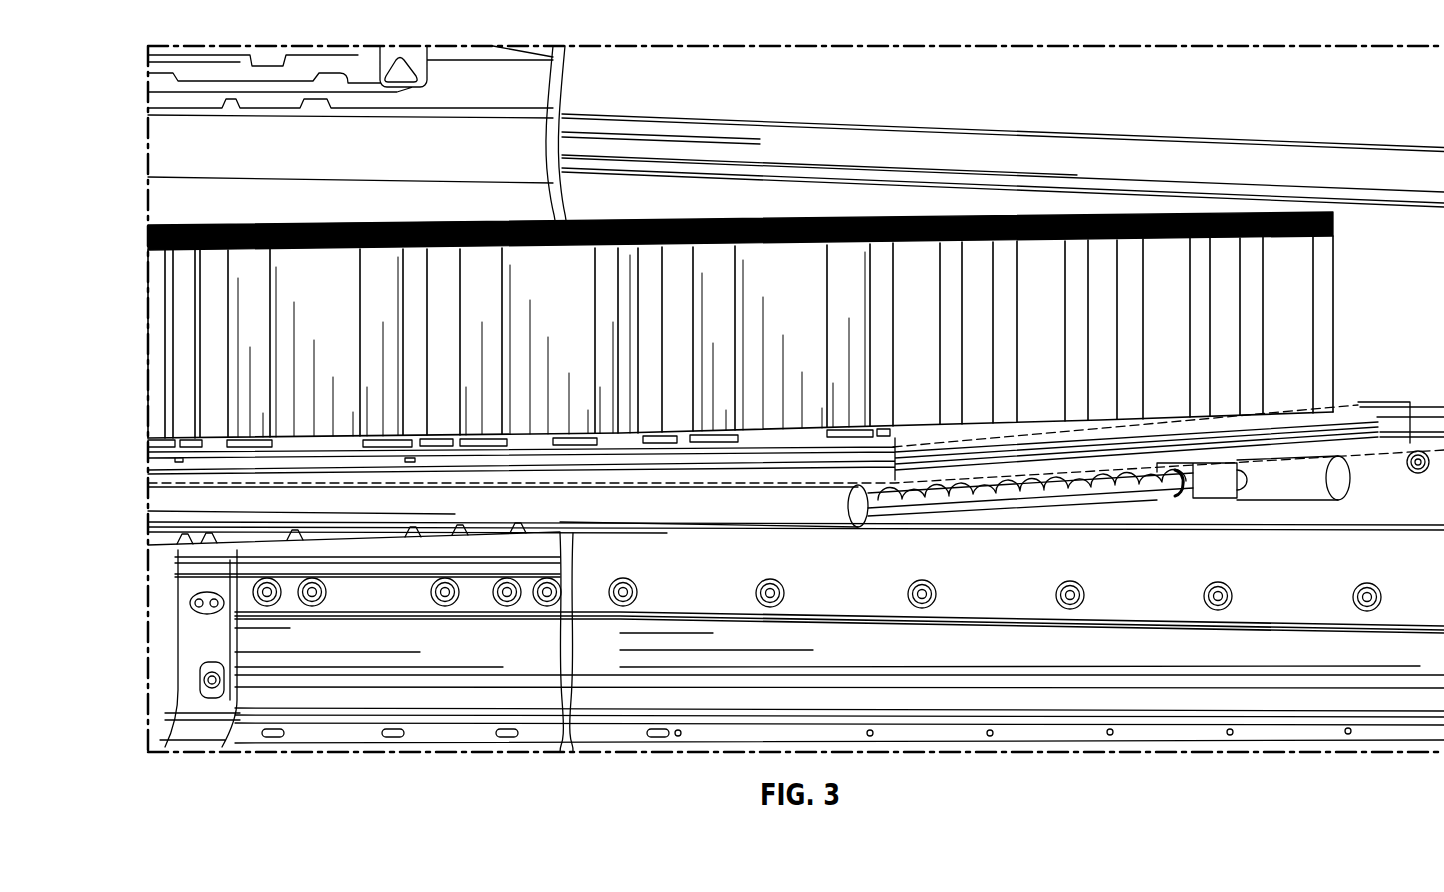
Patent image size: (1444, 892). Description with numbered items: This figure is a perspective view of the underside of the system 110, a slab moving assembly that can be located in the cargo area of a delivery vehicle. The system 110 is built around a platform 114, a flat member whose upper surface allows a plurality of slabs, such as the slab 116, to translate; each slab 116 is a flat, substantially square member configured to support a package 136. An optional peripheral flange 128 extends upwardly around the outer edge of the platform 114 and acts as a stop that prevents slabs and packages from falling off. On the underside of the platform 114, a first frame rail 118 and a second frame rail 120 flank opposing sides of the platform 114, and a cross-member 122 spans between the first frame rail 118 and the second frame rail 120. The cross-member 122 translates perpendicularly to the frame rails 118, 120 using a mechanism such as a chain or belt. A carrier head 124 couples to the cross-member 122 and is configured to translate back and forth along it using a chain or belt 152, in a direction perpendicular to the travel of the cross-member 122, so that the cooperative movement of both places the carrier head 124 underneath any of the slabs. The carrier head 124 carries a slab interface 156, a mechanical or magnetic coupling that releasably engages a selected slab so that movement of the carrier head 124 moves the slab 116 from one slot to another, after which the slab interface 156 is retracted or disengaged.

The system 110 is at (1343, 100).
The platform 114 is at (163, 480).
The slab 116 is at (681, 476).
The first frame rail 118 is at (833, 517).
The second frame rail 120 is at (1338, 479).
The cross-member 122 is at (927, 500).
The carrier head 124 is at (1213, 509).
The peripheral flange 128 is at (1366, 404).
The package 136 is at (778, 272).
The chain or belt 152 is at (1027, 497).
The slab interface 156 is at (1218, 478).